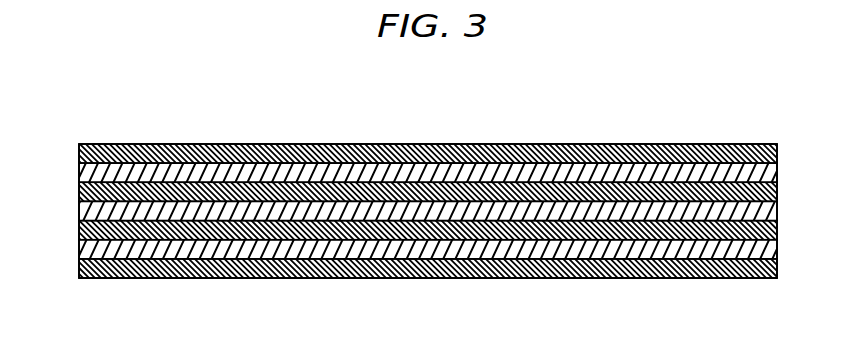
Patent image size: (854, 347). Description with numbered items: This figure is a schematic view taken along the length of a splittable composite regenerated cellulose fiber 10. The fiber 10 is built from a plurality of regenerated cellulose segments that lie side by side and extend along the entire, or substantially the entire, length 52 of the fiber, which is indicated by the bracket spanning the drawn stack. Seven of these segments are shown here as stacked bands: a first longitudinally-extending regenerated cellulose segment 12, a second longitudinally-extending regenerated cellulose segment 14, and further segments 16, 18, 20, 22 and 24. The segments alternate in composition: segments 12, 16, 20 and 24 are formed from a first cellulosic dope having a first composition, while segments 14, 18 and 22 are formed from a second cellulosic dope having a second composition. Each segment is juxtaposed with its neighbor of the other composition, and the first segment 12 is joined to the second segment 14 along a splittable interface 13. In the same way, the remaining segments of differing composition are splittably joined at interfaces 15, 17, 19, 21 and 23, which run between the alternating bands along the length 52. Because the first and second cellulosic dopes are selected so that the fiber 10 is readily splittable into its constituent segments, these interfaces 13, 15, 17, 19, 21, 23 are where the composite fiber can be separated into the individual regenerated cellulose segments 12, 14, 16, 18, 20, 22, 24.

The splittable composite regenerated cellulose fiber 10 is at (603, 118).
The first longitudinally-extending regenerated cellulose segment 12 is at (774, 152).
The splittable interface 13 is at (90, 158).
The second longitudinally-extending regenerated cellulose segment 14 is at (774, 173).
The splittable interface 15 is at (90, 195).
The regenerated cellulose segment 16 is at (774, 198).
The splittable interface 17 is at (90, 187).
The regenerated cellulose segment 18 is at (774, 210).
The splittable interface 19 is at (90, 235).
The regenerated cellulose segment 20 is at (774, 223).
The splittable interface 21 is at (90, 223).
The regenerated cellulose segment 22 is at (774, 248).
The splittable interface 23 is at (90, 262).
The regenerated cellulose segment 24 is at (774, 272).
The length of the fiber 52 is at (787, 287).